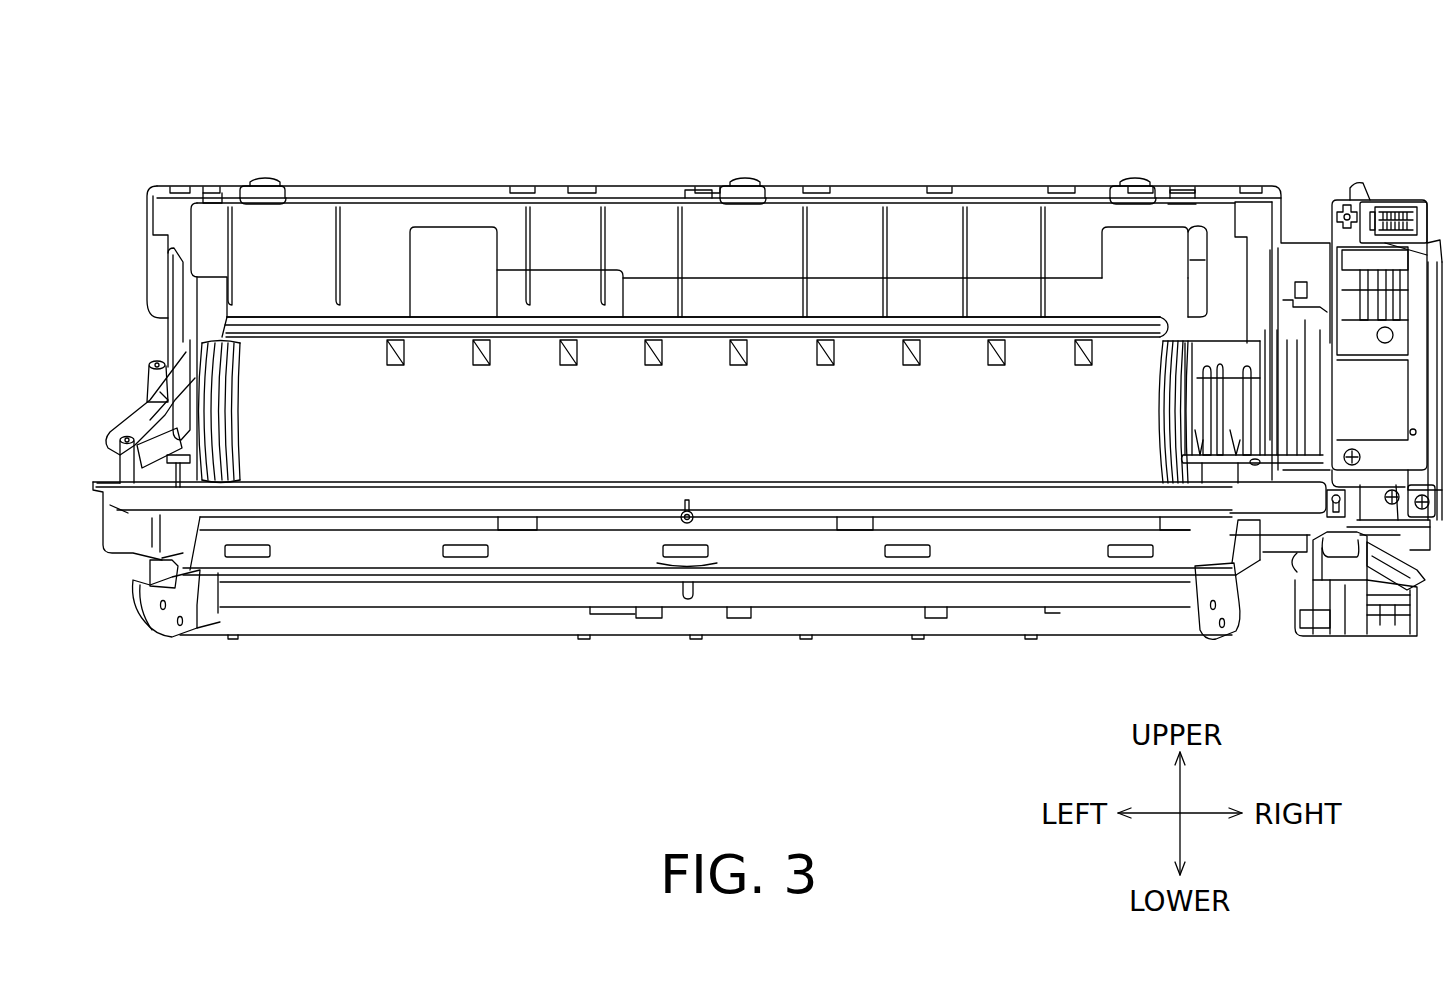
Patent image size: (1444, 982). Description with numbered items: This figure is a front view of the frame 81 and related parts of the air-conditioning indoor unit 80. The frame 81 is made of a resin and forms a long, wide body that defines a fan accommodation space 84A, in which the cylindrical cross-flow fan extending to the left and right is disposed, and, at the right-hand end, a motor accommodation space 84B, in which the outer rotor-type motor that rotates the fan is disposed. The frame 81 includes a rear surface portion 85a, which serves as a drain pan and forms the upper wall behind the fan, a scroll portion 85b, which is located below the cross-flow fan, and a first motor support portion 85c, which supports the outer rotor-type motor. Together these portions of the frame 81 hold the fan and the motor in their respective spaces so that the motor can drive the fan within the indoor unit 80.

The air-conditioning indoor unit 80 is at (388, 142).
The frame 81 is at (869, 188).
The fan accommodation space 84A is at (785, 375).
The motor accommodation space 84B is at (1222, 337).
The rear surface portion 85a is at (1020, 222).
The scroll portion 85b is at (267, 388).
The first motor support portion 85c is at (1237, 440).